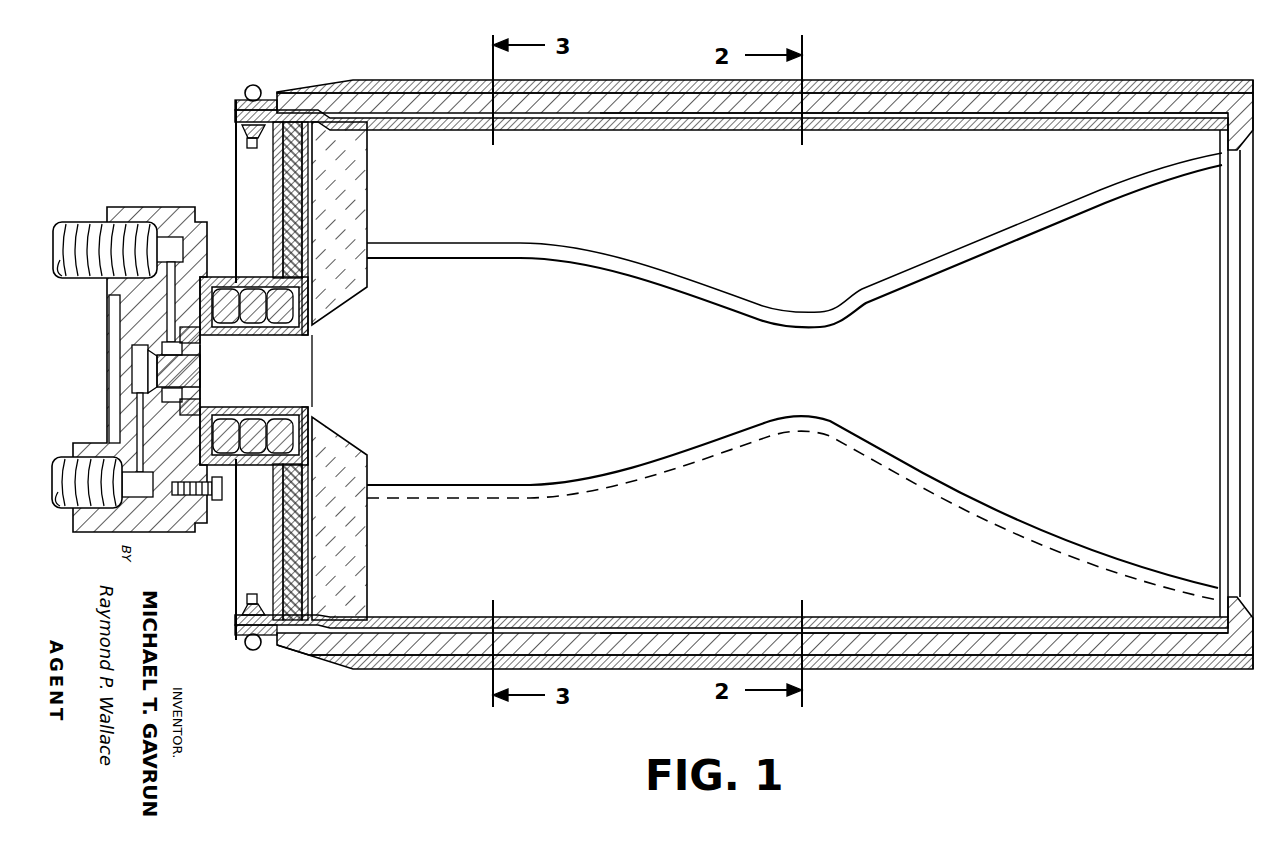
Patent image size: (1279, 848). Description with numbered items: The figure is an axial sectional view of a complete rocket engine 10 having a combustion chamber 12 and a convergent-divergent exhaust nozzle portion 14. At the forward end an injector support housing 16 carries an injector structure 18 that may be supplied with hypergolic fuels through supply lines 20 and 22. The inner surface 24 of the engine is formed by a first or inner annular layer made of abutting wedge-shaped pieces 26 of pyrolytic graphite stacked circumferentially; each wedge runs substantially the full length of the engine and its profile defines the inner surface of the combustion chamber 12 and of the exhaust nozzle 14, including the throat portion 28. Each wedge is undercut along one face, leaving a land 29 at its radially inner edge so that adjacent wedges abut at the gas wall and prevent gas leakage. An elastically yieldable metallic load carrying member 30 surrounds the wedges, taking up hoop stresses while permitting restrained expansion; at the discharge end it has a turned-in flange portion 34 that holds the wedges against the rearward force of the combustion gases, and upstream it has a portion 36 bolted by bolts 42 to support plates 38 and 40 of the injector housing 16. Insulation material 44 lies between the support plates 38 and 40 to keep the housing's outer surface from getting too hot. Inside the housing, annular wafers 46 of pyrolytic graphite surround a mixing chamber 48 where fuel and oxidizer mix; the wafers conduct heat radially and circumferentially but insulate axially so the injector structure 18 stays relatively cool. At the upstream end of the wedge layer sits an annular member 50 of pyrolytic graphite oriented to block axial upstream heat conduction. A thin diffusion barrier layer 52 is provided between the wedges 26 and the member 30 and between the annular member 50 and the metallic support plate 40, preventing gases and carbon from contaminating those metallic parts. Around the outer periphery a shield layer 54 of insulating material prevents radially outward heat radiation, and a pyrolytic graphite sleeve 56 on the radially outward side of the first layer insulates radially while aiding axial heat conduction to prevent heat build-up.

The rocket engine 10 is at (445, 68).
The combustion chamber 12 is at (489, 365).
The convergent-divergent exhaust nozzle portion 14 is at (1067, 365).
The injector support housing 16 is at (163, 196).
The injector structure 18 is at (218, 383).
The supply line 20 is at (92, 224).
The supply line 22 is at (78, 456).
The inner surface 24 is at (606, 278).
The wedge-shaped pieces 26 is at (799, 391).
The throat portion 28 is at (809, 375).
The land 29 is at (950, 262).
The elastically yieldable metallic load carrying member 30 is at (848, 104).
The turned-in flange portion 34 is at (1250, 110).
The portion of member 30 36 is at (236, 100).
The support plate 38 is at (278, 216).
The support plate 40 is at (305, 156).
The bolts 42 is at (258, 86).
The insulation material 44 is at (296, 193).
The wafers of pyrolytic graphite 46 is at (280, 296).
The mixing chamber 48 is at (256, 371).
The annular member of pyrolytic graphite 50 is at (370, 198).
The diffusion barrier layer 52 is at (954, 108).
The shield layer 54 is at (1086, 88).
The sleeve 56 is at (876, 130).